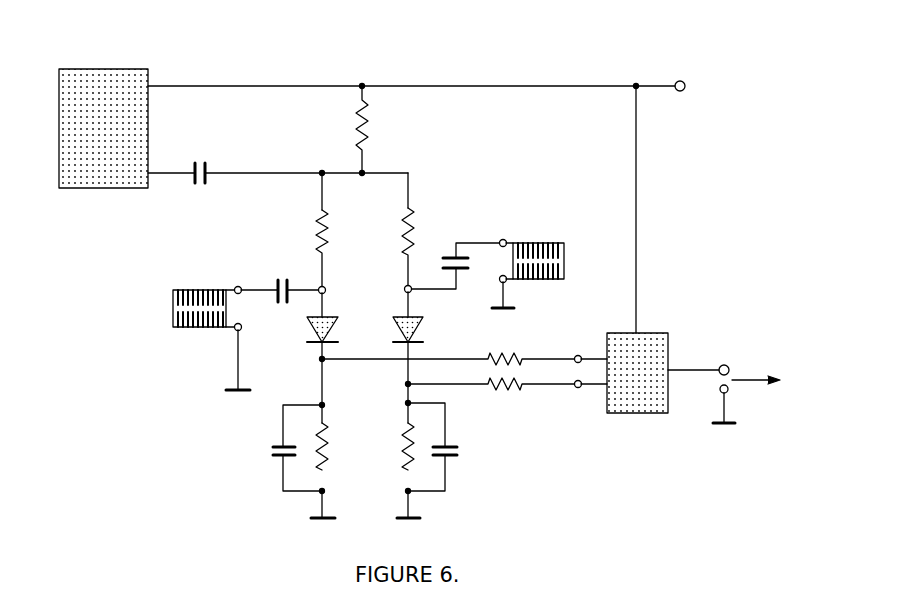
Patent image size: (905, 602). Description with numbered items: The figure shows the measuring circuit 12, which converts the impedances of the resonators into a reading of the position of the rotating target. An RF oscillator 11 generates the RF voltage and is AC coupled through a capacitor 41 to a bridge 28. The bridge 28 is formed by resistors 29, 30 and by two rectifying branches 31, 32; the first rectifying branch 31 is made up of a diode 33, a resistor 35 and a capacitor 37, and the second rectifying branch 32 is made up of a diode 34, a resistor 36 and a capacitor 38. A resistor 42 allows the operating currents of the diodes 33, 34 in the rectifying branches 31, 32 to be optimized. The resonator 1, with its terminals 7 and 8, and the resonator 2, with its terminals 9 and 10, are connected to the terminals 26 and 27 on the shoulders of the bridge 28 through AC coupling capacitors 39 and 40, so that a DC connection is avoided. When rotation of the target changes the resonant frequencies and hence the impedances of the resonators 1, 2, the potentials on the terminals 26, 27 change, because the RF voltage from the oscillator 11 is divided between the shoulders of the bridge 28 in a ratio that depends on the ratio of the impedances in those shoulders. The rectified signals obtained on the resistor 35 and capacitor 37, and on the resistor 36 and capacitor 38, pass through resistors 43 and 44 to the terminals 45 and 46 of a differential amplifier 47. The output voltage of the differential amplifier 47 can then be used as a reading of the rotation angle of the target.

The measuring circuit 12 is at (320, 52).
The RF oscillator 11 is at (103, 186).
The capacitor 41 is at (200, 162).
The bridge 28 is at (342, 154).
The resistor 42 is at (367, 122).
The resistor 29 is at (318, 230).
The resistor 30 is at (405, 230).
The AC coupling capacitor 40 is at (455, 258).
The terminal 9 is at (502, 239).
The resonator 2 is at (543, 230).
The terminal 10 is at (506, 282).
The resonator 1 is at (202, 276).
The terminal 7 is at (239, 286).
The terminal 8 is at (236, 330).
The AC coupling capacitor 39 is at (280, 303).
The terminal 26 is at (325, 288).
The terminal 27 is at (412, 292).
The diode 33 is at (326, 318).
The diode 34 is at (412, 338).
The rectifying branch 31 is at (245, 440).
The resistor 35 is at (328, 440).
The capacitor 37 is at (277, 456).
The rectifying branch 32 is at (468, 438).
The resistor 36 is at (404, 446).
The capacitor 38 is at (448, 456).
The resistor 43 is at (508, 352).
The resistor 44 is at (500, 392).
The terminal 45 is at (578, 355).
The terminal 46 is at (578, 390).
The differential amplifier 47 is at (655, 333).